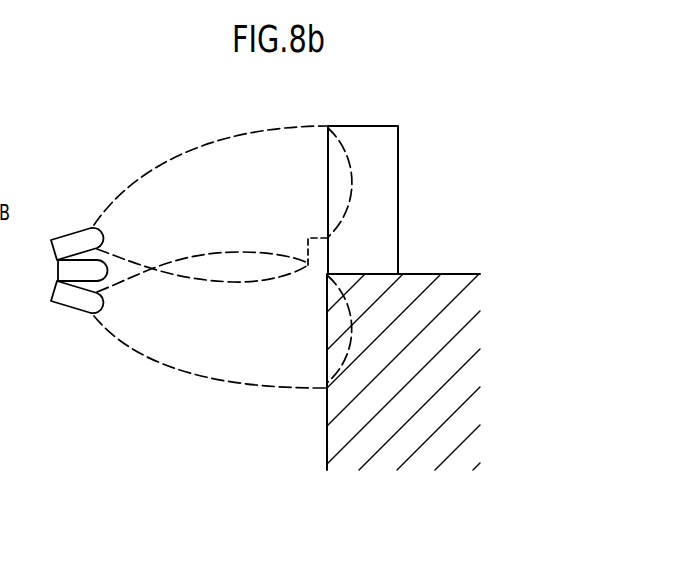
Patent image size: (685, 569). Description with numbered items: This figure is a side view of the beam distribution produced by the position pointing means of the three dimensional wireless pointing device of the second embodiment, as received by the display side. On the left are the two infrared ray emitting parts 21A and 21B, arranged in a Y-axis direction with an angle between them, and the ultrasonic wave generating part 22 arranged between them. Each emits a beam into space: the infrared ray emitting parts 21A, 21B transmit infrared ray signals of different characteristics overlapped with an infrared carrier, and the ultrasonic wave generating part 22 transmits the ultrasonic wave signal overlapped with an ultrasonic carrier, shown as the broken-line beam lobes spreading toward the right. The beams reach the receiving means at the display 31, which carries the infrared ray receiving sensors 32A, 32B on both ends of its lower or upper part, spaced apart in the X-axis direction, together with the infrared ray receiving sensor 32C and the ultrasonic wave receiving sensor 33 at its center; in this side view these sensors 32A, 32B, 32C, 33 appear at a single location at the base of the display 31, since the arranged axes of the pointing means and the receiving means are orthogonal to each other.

The infrared ray emitting part 21A is at (68, 238).
The infrared ray emitting part 21B is at (71, 303).
The ultrasonic wave generating part 22 is at (58, 272).
The display 31 is at (383, 167).
The infrared ray receiving sensor 32A is at (260, 368).
The infrared ray receiving sensor 32B is at (260, 368).
The infrared ray receiving sensor 32C is at (260, 368).
The ultrasonic wave receiving sensor 33 is at (311, 270).